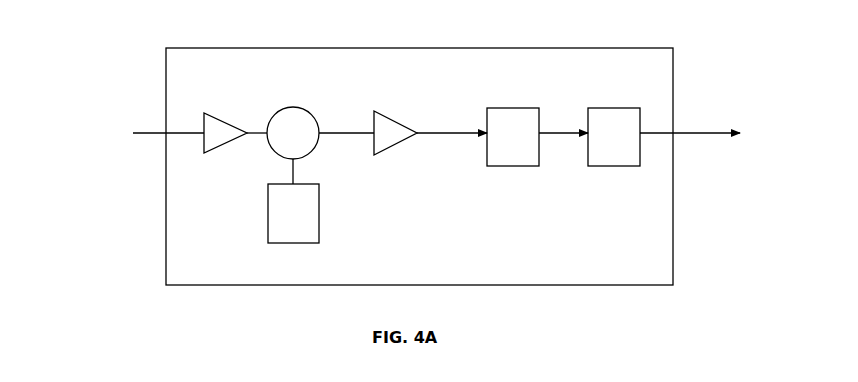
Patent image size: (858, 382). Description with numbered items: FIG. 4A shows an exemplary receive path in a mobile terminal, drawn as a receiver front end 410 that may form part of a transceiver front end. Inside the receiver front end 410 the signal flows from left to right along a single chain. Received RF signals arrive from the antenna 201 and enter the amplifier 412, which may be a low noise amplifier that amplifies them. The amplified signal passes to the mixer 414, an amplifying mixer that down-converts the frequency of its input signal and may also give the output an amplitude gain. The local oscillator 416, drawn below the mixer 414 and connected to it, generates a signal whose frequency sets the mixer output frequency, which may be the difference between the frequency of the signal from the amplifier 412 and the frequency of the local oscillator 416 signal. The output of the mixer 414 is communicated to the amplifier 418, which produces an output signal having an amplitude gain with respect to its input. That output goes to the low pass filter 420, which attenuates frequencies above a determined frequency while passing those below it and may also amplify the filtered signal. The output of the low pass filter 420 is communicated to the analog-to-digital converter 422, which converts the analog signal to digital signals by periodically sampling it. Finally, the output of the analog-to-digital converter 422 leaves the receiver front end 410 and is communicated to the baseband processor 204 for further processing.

The receiver front end 410 is at (397, 48).
The antenna 201 is at (70, 168).
The amplifier 412 is at (245, 96).
The mixer 414 is at (345, 96).
The local oscillator 416 is at (268, 190).
The amplifier 418 is at (417, 96).
The low pass filter 420 is at (488, 108).
The analog-to-digital converter 422 is at (589, 108).
The baseband processor 204 is at (780, 175).